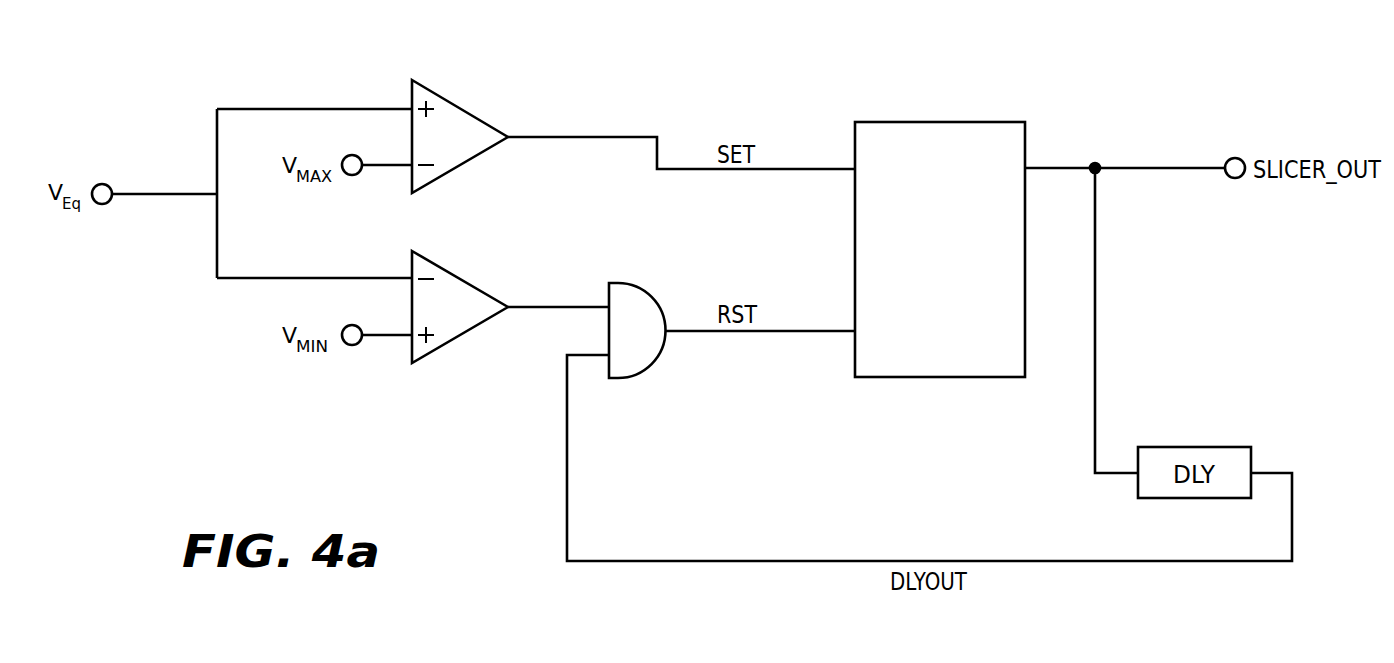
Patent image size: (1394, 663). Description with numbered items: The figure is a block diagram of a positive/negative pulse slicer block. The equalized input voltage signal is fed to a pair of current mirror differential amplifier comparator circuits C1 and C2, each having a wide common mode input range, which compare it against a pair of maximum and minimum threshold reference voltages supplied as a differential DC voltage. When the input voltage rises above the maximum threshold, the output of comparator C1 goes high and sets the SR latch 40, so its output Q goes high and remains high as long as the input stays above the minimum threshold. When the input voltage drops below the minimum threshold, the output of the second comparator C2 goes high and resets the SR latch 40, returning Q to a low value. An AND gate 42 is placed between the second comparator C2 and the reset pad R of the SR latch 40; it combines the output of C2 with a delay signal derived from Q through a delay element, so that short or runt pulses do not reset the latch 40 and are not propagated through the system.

The SR latch 40 is at (948, 122).
The AND gate 42 is at (651, 363).
The comparator circuit C1 is at (470, 110).
The second comparator circuit C2 is at (470, 280).